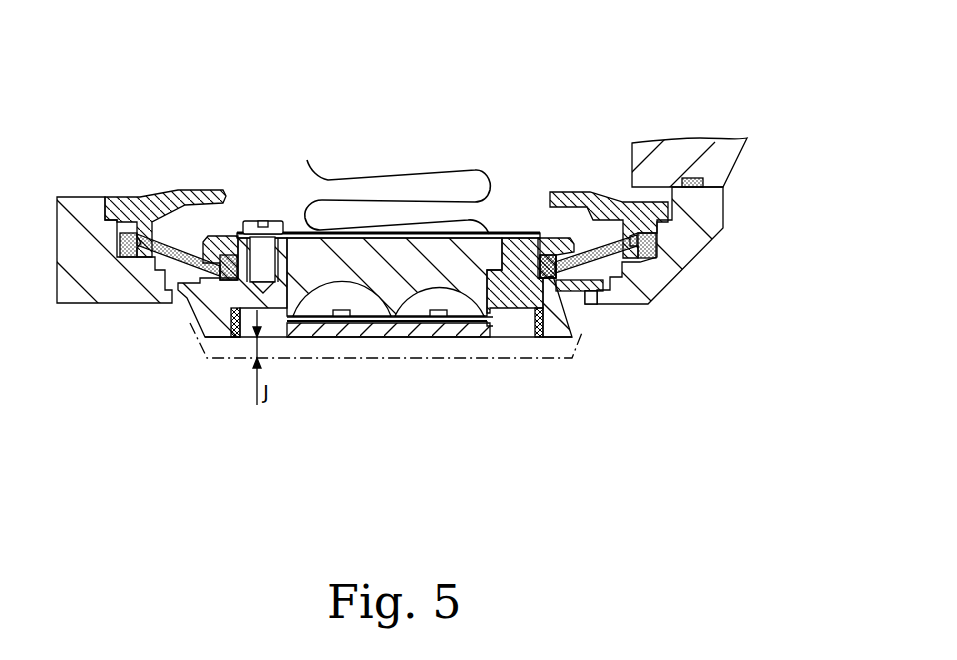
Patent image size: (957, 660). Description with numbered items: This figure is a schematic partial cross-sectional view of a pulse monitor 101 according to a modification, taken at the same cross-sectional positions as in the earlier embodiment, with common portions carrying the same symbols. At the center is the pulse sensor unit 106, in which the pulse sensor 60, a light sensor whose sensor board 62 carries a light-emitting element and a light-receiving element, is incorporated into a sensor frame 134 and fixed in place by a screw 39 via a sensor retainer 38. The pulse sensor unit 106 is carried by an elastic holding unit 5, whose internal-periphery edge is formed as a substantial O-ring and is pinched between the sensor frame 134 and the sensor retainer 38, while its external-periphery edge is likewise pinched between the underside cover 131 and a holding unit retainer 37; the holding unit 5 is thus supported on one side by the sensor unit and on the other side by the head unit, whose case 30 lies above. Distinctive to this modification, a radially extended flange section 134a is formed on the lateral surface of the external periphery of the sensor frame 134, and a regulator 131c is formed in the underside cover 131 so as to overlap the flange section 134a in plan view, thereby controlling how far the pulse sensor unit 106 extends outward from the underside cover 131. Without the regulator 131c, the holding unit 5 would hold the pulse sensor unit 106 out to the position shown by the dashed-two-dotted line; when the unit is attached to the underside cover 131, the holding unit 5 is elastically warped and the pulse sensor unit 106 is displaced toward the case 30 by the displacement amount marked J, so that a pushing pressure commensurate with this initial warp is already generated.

The pulse monitor 101 is at (546, 51).
The holding unit 5 is at (577, 260).
The case 30 is at (728, 170).
The holding unit retainer 37 is at (190, 190).
The sensor retainer 38 is at (222, 237).
The screw 39 is at (268, 221).
The pulse sensor 60 is at (322, 300).
The sensor board 62 is at (395, 165).
The pulse sensor unit 106 is at (390, 366).
The underside cover 131 is at (686, 257).
The regulator 131c is at (600, 306).
The sensor frame 134 is at (193, 306).
The flange section 134a is at (592, 292).